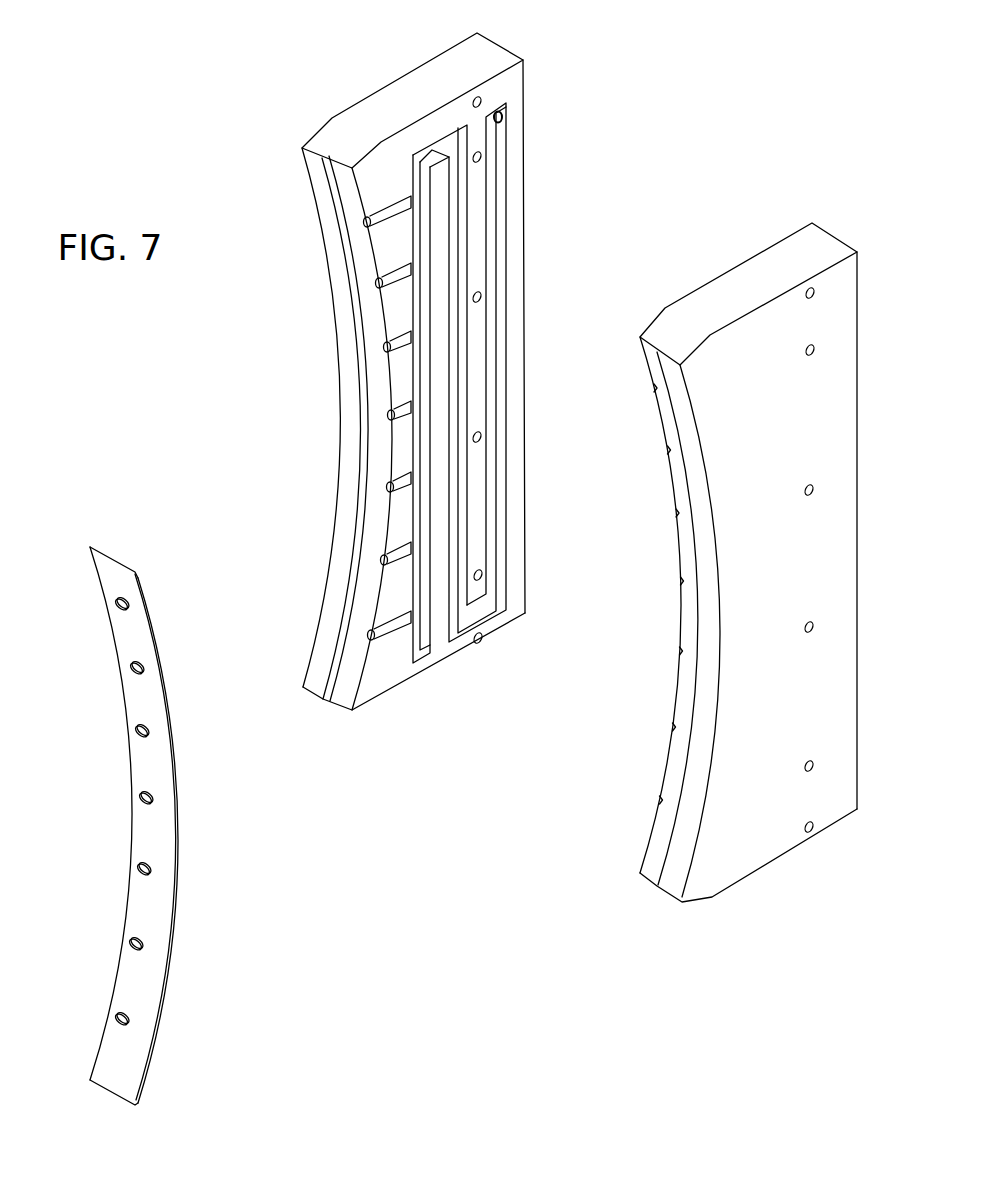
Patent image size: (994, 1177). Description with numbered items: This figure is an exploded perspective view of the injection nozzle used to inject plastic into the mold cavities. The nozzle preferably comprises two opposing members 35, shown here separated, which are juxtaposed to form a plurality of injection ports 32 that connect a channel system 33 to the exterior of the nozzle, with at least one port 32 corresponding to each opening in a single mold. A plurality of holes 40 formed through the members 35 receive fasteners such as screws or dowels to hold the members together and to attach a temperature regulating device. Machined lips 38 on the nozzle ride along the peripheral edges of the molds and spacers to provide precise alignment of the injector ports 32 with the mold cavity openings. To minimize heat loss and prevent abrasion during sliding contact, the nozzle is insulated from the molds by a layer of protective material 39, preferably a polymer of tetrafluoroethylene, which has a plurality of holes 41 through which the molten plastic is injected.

The injection ports 32 is at (395, 367).
The channel system 33 is at (497, 223).
The opposing members 35 is at (410, 103).
The machined lips 38 is at (345, 555).
The protective material 39 is at (112, 570).
The holes 40 is at (481, 576).
The holes 41 is at (132, 668).